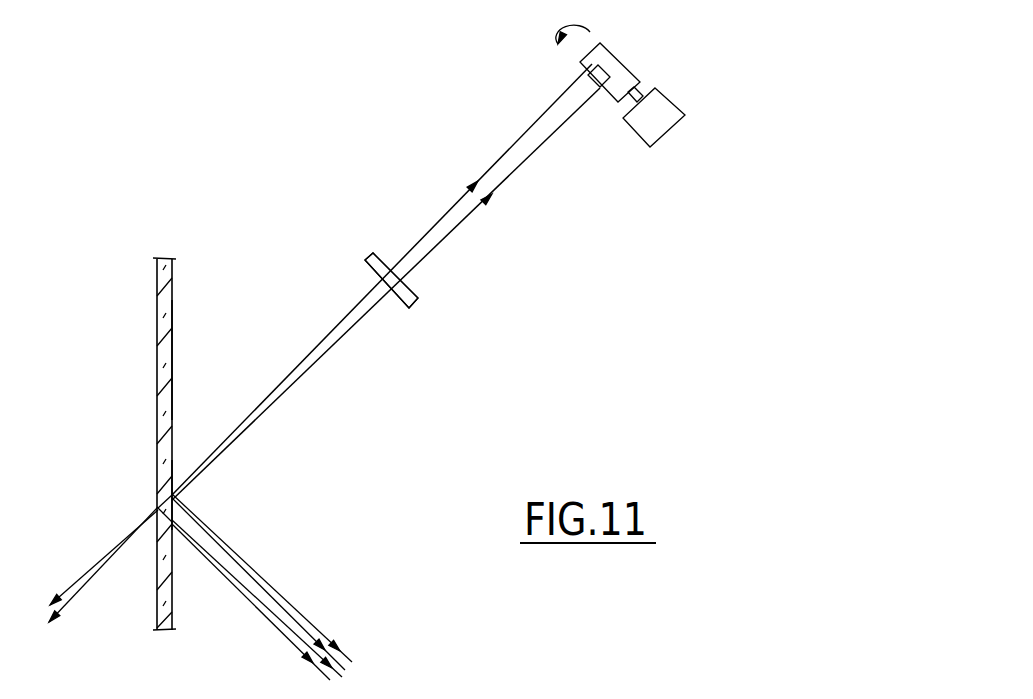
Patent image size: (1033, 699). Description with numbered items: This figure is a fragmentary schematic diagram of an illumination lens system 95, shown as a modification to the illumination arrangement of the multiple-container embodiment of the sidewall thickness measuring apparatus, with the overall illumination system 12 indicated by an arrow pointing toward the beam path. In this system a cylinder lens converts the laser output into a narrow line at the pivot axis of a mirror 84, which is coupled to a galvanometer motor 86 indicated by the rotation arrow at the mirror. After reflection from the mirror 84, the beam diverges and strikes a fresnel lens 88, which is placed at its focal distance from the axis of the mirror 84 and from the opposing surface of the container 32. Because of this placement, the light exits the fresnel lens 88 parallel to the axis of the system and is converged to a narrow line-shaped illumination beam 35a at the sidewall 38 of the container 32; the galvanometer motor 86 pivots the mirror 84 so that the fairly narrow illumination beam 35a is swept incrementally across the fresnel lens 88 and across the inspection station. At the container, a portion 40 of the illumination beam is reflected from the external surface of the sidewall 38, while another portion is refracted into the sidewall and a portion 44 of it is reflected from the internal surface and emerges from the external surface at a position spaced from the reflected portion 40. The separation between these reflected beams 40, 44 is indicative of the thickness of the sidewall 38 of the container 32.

The laser scanning system 12 is at (382, 150).
The container 32 is at (157, 306).
The sidewall 38 is at (168, 392).
The illumination beam 35a is at (182, 487).
The reflected portion of illumination beam 40 is at (190, 511).
The reflected portion from internal sidewall surface 44 is at (197, 545).
The fresnel lens 88 is at (418, 302).
The illumination lens system 95 is at (365, 250).
The mirror 84 is at (623, 68).
The galvanometer motor 86 is at (668, 105).